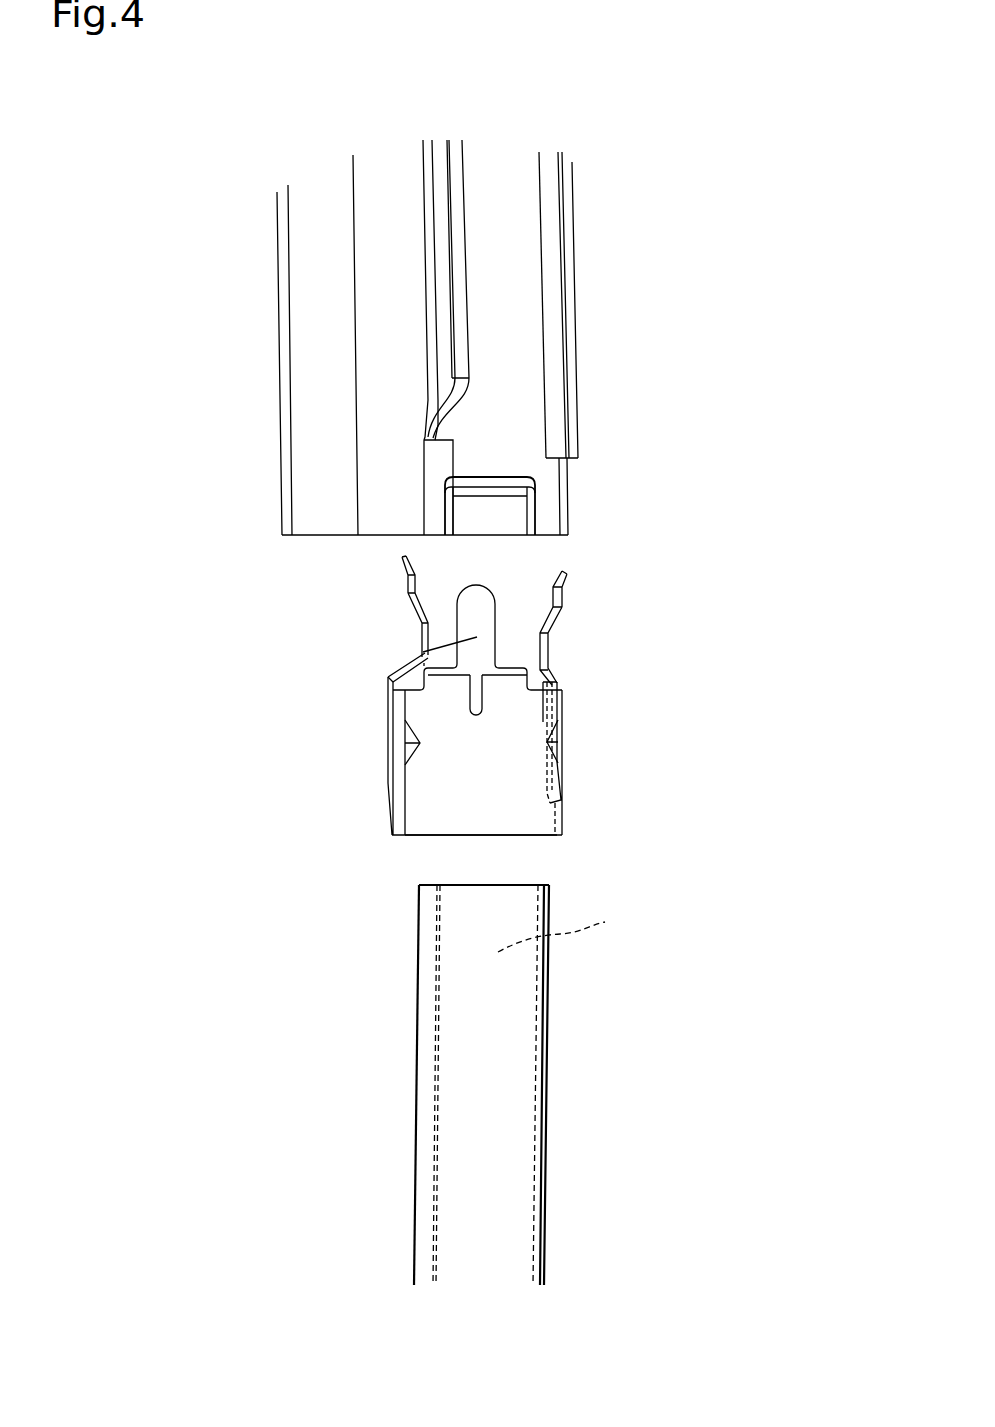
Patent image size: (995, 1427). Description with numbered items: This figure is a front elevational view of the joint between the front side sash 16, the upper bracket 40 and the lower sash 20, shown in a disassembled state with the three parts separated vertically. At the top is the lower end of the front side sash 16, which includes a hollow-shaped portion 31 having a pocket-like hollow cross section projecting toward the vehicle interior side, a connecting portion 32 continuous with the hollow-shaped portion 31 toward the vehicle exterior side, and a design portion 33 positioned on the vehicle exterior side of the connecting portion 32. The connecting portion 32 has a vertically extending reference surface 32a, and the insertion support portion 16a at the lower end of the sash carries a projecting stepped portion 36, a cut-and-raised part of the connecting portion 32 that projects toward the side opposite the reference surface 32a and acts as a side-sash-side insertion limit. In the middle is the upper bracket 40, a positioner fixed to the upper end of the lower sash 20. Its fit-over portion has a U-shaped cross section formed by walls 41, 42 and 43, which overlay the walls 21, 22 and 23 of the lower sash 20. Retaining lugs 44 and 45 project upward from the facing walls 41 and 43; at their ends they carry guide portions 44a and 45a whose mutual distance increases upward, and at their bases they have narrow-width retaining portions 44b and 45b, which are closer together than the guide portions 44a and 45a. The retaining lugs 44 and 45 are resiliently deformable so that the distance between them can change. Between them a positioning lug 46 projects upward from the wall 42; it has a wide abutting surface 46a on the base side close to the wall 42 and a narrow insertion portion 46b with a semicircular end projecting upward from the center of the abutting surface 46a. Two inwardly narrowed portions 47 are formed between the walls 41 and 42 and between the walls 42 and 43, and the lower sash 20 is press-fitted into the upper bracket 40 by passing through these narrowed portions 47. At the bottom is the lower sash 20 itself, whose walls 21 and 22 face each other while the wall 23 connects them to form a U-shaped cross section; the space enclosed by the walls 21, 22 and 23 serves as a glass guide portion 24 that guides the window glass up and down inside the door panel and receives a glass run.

The front side sash 16 is at (623, 343).
The insertion support portion 16a is at (542, 305).
The hollow-shaped portion 31 is at (310, 297).
The connecting portion 32 is at (309, 337).
The reference surface 32a is at (438, 487).
The design portion 33 is at (572, 318).
The projecting stepped portion 36 is at (503, 517).
The upper bracket 40 is at (471, 715).
The wall 41 is at (388, 785).
The wall 42 is at (427, 807).
The wall 43 is at (562, 782).
The retaining lug 44 is at (326, 606).
The guide portion 44a is at (403, 569).
The narrow-width retaining portion 44b is at (418, 639).
The retaining lug 45 is at (633, 628).
The guide portion 45a is at (565, 580).
The narrow-width retaining portion 45b is at (548, 645).
The positioning lug 46 is at (347, 670).
The abutting surface 46a is at (443, 678).
The insertion portion 46b is at (417, 660).
The inwardly narrowed portion 47 is at (405, 748).
The lower sash 20 is at (486, 1085).
The wall 21 is at (420, 1037).
The wall 22 is at (470, 1110).
The wall 23 is at (548, 1040).
The glass guide portion 24 is at (566, 932).